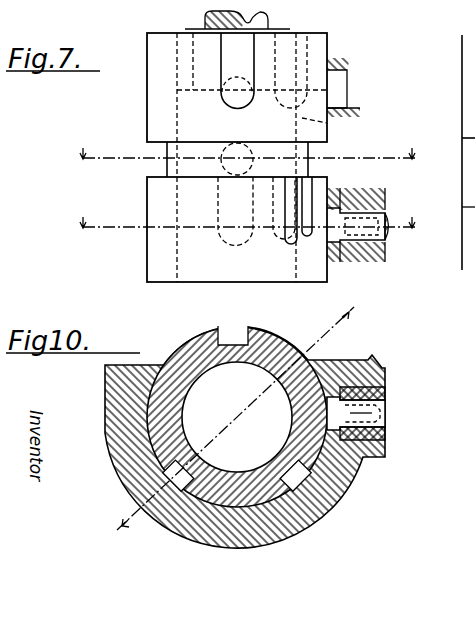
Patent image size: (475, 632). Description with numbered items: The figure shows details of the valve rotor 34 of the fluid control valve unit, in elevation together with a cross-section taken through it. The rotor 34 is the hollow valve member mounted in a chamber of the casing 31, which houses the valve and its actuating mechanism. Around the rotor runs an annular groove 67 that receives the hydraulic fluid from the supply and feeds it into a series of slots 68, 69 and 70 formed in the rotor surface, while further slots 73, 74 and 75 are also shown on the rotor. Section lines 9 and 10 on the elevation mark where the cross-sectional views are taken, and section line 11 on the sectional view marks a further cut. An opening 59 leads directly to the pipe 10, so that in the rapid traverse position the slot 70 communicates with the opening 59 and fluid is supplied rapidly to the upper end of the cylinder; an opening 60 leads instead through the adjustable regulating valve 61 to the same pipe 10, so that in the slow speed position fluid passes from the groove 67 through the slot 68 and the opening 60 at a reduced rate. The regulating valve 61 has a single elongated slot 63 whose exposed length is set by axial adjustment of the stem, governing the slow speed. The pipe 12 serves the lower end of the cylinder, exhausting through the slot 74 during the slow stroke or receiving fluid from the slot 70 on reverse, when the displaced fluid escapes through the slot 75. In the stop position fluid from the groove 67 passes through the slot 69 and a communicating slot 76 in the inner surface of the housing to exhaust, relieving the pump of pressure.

In FIG. 7, the section line 9- 9 is at (247, 157).
In FIG. 7, the pipe 10 is at (244, 160).
In FIG. 10, the section line 11- 11 is at (231, 417).
In FIG. 7, the pipe 12 is at (232, 78).
In FIG. 10, the casing 31 is at (104, 396).
In FIG. 7, the valve rotor 34 is at (328, 50).
In FIG. 10, the valve rotor 34 is at (262, 358).
In FIG. 7, the opening 59 is at (342, 68).
In FIG. 7, the opening 60 is at (333, 262).
In FIG. 10, the opening 60 is at (356, 390).
In FIG. 7, the regulating valve 61 is at (372, 250).
In FIG. 10, the regulating valve 61 is at (384, 409).
In FIG. 10, the slot 63 is at (372, 421).
In FIG. 7, the annular groove 67 is at (152, 143).
In FIG. 7, the slot 68 is at (290, 240).
In FIG. 10, the slot 68 is at (294, 473).
In FIG. 7, the slot 69 is at (219, 213).
In FIG. 10, the slot 69 is at (232, 330).
In FIG. 7, the slot 70 is at (329, 125).
In FIG. 7, the slot 73 is at (184, 38).
In FIG. 7, the slot 74 is at (291, 45).
In FIG. 7, the slot 75 is at (237, 60).
In FIG. 10, the communicating slot 76 is at (146, 492).